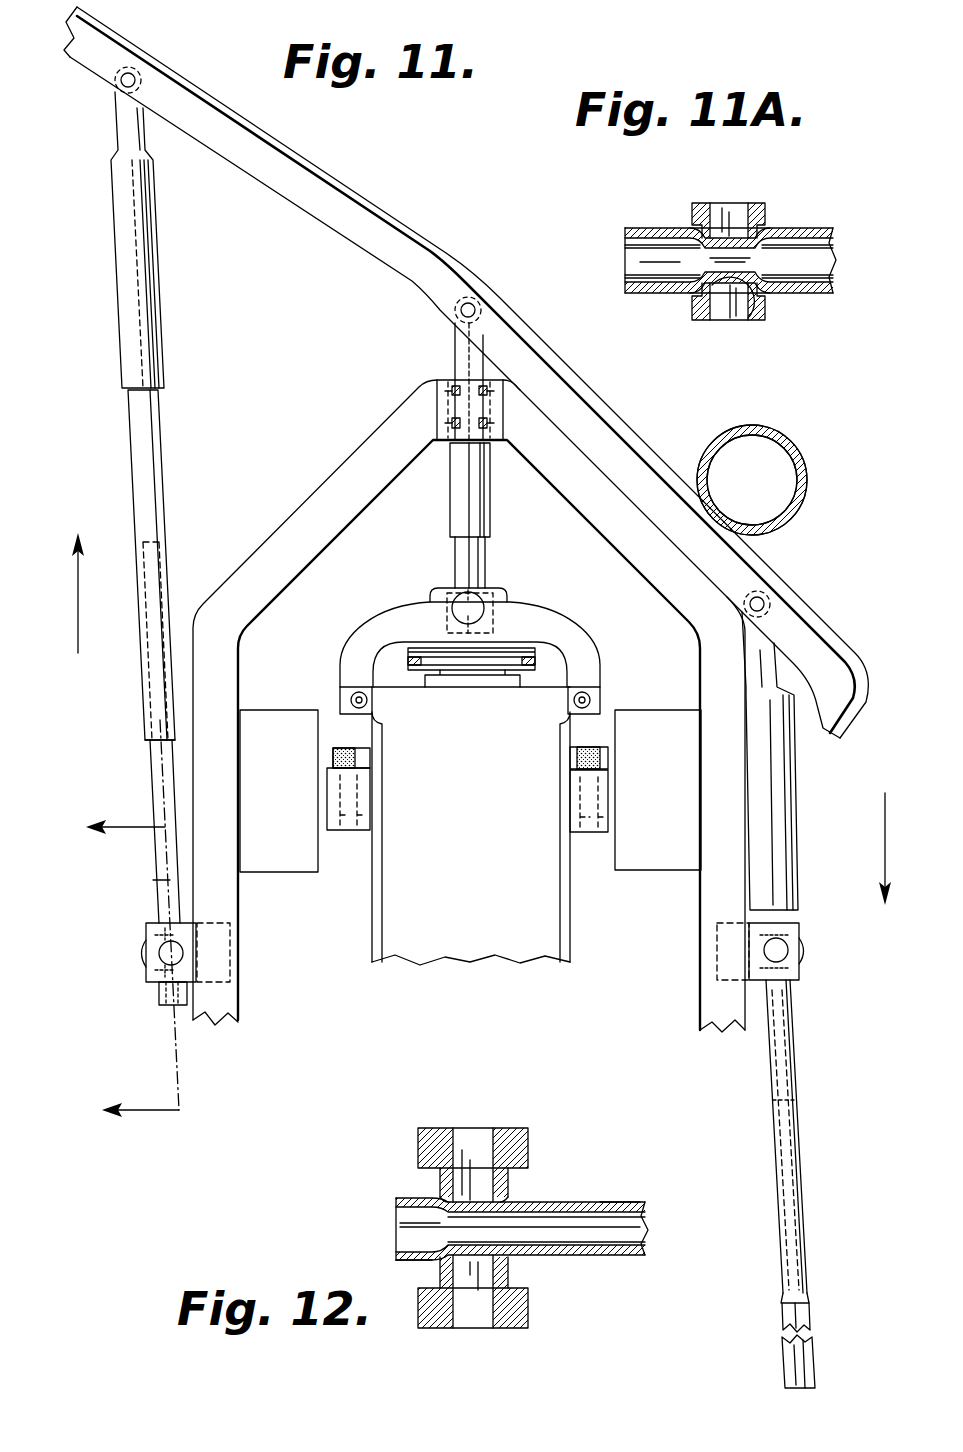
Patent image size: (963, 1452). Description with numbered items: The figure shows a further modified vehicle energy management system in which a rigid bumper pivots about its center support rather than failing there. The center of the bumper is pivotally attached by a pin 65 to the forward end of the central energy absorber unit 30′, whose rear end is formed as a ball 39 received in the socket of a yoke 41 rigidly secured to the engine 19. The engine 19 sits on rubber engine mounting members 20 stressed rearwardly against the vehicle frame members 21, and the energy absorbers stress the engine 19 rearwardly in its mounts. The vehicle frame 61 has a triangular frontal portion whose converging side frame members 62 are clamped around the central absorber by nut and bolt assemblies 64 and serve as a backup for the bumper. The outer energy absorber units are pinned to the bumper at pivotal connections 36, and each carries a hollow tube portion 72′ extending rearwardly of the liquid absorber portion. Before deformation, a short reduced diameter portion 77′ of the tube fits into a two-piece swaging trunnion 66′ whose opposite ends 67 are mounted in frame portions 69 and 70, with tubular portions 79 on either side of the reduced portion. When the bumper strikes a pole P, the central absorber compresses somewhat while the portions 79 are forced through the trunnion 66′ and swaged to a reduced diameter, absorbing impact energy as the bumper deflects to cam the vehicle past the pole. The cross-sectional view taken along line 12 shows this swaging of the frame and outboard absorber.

In FIG. 11, the section line 12 is at (475, 840).
In FIG. 11, the vehicle engine 19 is at (463, 953).
In FIG. 11, the rubber engine mounting members 20 is at (333, 753).
In FIG. 11, the vehicle frame members 21 is at (330, 771).
In FIG. 11, the central energy absorber unit 30′ is at (455, 498).
In FIG. 11, the pivotal connections 36 is at (134, 73).
In FIG. 11, the ball 39 is at (432, 606).
In FIG. 11, the yoke 41 is at (565, 648).
In FIG. 11, the vehicle frame 61 is at (225, 1032).
In FIG. 11, the side frame members 62 is at (302, 504).
In FIG. 11, the nut and bolt assemblies 64 is at (450, 422).
In FIG. 11, the pin 65 is at (473, 303).
In FIG. 11, the swaging trunnion 66′ is at (142, 953).
In FIG. 12, the swaging trunnion 66′ is at (510, 1182).
In FIG. 11, the trunnion ends 67 is at (192, 951).
In FIG. 11A, the trunnion ends 67 is at (727, 208).
In FIG. 12, the trunnion ends 67 is at (473, 1130).
In FIG. 12, the frame portion 69 is at (418, 1147).
In FIG. 12, the frame portion 70 is at (529, 1318).
In FIG. 11, the hollow tube portion 72′ is at (147, 691).
In FIG. 11A, the hollow tube portion 72′ is at (800, 228).
In FIG. 12, the hollow tube portion 72′ is at (400, 1198).
In FIG. 11, the reduced diameter portion 77′ is at (148, 752).
In FIG. 11A, the reduced diameter portion 77′ is at (720, 320).
In FIG. 11, the tubular portions 79 is at (158, 993).
In FIG. 11A, the tubular portions 79 is at (652, 228).
In FIG. 12, the tubular portions 79 is at (396, 1258).
In FIG. 11, the pole P is at (796, 446).